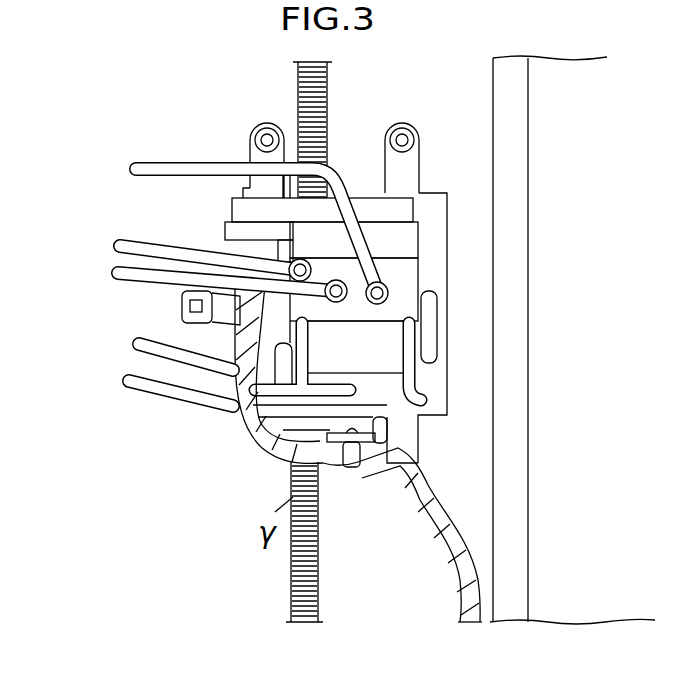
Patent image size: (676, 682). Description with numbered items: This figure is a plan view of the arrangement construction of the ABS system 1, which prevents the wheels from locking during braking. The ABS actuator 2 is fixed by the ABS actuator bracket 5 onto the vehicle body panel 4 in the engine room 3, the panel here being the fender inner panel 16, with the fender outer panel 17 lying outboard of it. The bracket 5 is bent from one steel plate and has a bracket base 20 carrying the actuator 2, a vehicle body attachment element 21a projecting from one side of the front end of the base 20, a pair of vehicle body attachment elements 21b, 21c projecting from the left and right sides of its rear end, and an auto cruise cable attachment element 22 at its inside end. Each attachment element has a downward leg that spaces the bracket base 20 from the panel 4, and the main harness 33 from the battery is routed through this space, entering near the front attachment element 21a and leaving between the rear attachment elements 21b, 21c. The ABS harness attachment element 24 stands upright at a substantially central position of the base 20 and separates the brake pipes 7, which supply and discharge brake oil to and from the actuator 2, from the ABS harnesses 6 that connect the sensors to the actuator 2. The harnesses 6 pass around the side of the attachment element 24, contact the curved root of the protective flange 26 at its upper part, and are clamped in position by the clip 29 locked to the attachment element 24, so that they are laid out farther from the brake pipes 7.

The ABS system 1 is at (361, 88).
The ABS actuator 2 is at (438, 266).
The engine room 3 is at (66, 131).
The vehicle body panel 4 is at (470, 118).
The ABS actuator bracket 5 is at (440, 218).
The ABS harnesses 6 is at (270, 443).
The brake pipes 7 is at (155, 273).
The fender inner panel 16 is at (478, 453).
The fender outer panel 17 is at (573, 605).
The bracket base 20 is at (430, 390).
The vehicle body attachment element 21a is at (415, 462).
The vehicle body attachment element 21b is at (413, 148).
The vehicle body attachment element 21c is at (256, 155).
The auto cruise cable attachment element 22 is at (182, 322).
The ABS harness attachment element 24 is at (440, 375).
The flange 26 is at (320, 423).
The clip 29 is at (352, 465).
The main harness 33 is at (308, 572).